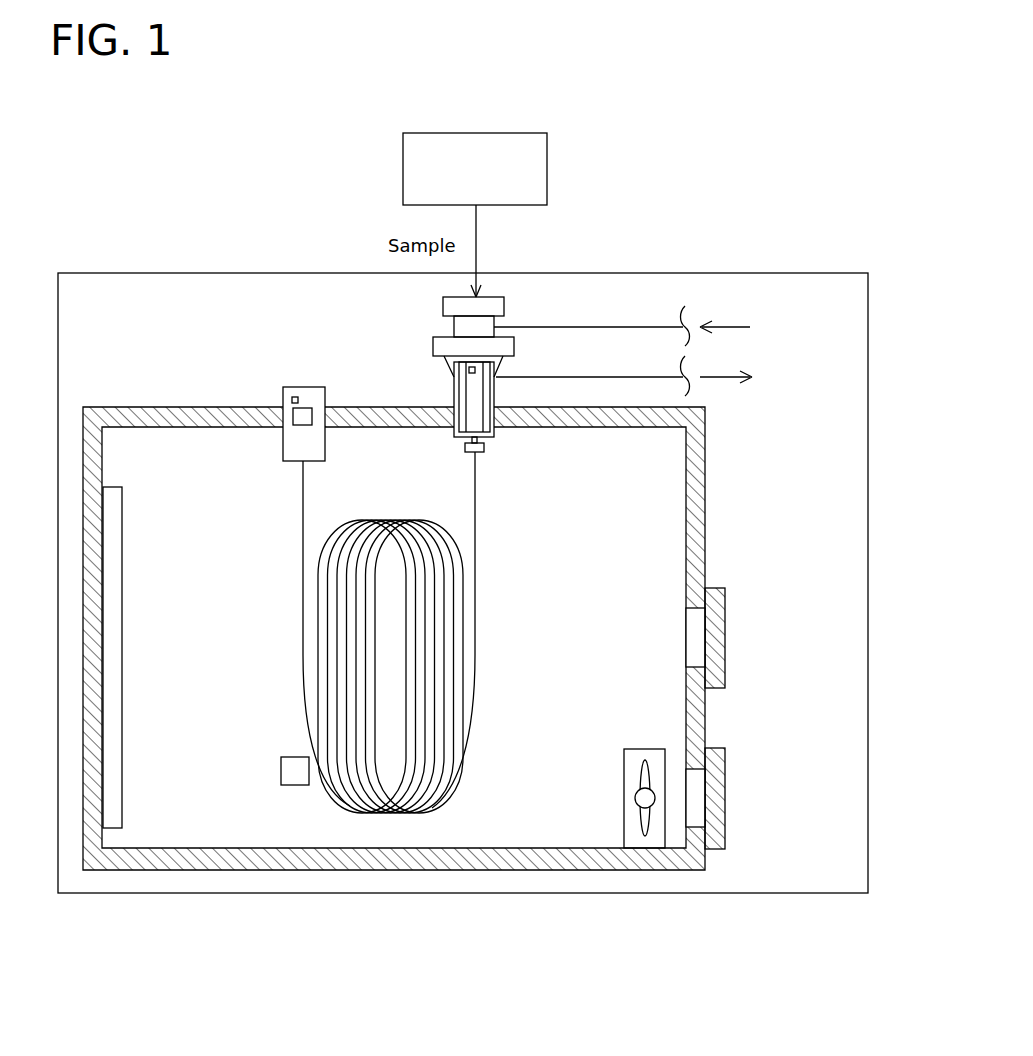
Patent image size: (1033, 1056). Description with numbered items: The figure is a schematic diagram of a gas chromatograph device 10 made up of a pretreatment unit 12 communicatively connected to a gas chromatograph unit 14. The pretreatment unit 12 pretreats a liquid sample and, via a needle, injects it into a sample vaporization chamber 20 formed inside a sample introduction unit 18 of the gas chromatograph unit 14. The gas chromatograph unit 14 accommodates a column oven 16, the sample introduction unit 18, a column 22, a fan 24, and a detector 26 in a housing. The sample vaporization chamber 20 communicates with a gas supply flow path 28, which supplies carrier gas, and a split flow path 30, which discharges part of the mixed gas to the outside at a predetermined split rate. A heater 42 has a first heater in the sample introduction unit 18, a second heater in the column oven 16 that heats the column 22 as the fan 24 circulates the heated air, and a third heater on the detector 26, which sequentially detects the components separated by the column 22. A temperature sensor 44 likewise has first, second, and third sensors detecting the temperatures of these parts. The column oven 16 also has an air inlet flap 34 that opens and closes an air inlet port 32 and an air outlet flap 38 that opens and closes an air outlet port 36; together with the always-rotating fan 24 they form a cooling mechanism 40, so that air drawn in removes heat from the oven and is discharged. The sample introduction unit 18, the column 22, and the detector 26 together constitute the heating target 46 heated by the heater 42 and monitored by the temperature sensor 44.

The gas chromatograph device 10 is at (236, 176).
The pretreatment unit 12 is at (547, 150).
The gas chromatograph unit 14 is at (652, 252).
The column oven 16 is at (705, 500).
The sample introduction unit 18 is at (504, 297).
The sample vaporization chamber 20 is at (470, 412).
The column 22 is at (487, 727).
The fan 24 is at (624, 762).
The detector 26 is at (313, 387).
The gas supply flow path 28 is at (593, 327).
The split flow path 30 is at (593, 377).
The air inlet port 32 is at (697, 790).
The air inlet flap 34 is at (752, 739).
The air outlet port 36 is at (697, 633).
The air outlet flap 38 is at (752, 578).
The cooling mechanism 40 is at (523, 596).
The heater 42 is at (459, 385).
The temperature sensor 44 is at (468, 369).
The heating target 46 is at (429, 587).